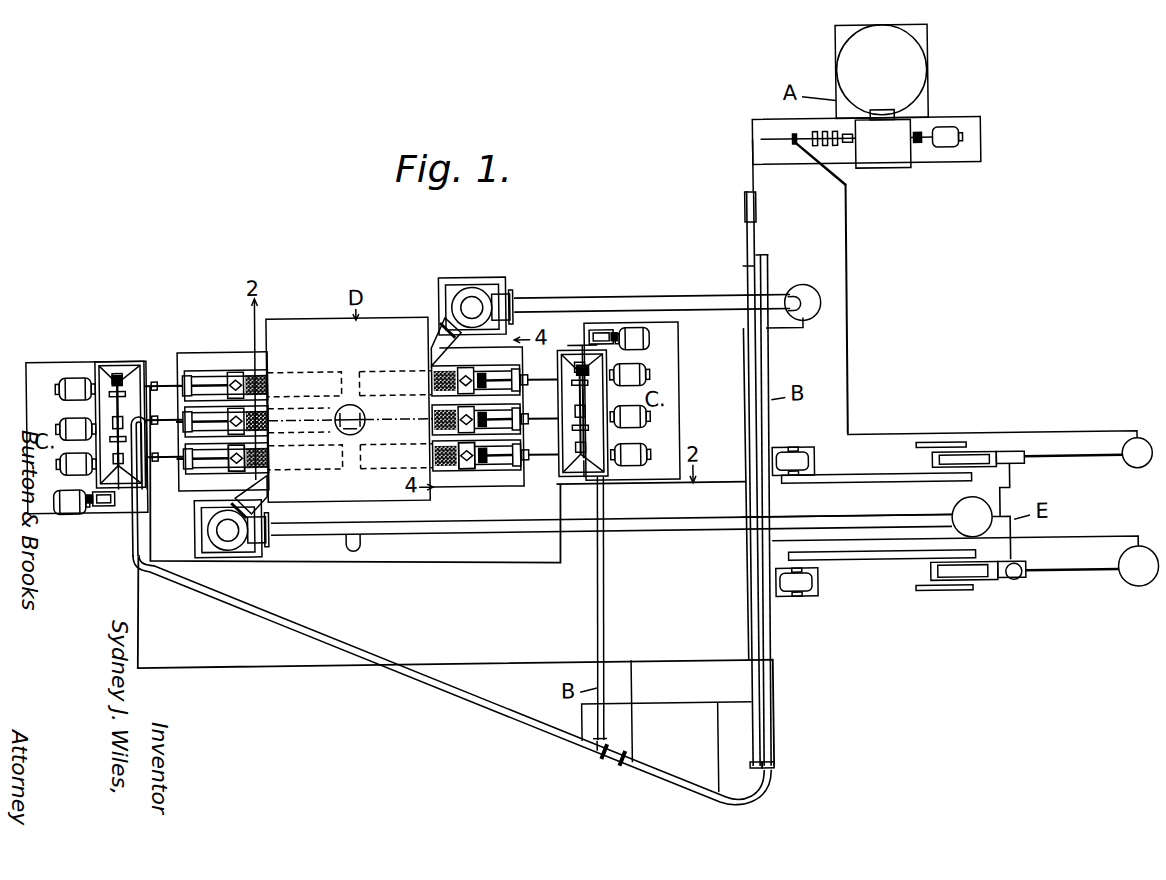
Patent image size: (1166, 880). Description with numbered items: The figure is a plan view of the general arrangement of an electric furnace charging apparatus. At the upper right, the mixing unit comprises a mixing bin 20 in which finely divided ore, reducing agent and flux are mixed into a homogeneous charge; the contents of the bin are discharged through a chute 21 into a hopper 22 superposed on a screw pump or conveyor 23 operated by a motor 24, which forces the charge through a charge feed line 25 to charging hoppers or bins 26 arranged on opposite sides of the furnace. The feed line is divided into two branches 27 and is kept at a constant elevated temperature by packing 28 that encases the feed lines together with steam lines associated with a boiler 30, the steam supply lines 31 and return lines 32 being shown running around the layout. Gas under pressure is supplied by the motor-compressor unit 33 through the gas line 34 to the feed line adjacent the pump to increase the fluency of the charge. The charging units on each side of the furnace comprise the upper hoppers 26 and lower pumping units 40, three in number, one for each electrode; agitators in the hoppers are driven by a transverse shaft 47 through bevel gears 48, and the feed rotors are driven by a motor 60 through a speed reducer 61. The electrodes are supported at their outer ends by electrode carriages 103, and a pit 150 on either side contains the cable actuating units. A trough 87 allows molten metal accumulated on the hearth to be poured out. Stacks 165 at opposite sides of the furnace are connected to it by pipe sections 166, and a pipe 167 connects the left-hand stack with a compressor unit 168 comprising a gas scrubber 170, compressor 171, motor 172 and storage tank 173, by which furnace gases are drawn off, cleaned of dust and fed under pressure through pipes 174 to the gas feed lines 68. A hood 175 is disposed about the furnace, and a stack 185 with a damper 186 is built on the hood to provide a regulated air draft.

The mixing bin 20 is at (914, 70).
The chute 21 is at (885, 118).
The hopper 22 is at (889, 150).
The screw pump or conveyor 23 is at (840, 146).
The motor 24 is at (945, 150).
The charge feed line 25 is at (758, 182).
The charging hoppers or bins 26 is at (120, 362).
The branches 27 is at (607, 747).
The packing 28 is at (336, 643).
The boiler 30 is at (807, 298).
The steam supply lines 31 is at (770, 349).
The return lines 32 is at (760, 335).
The motor-compressor unit 33 is at (933, 458).
The gas line 34 is at (905, 433).
The pumping units 40 is at (68, 410).
The transverse shaft 47 is at (121, 412).
The bevel gears 48 is at (124, 392).
The motor 60 is at (70, 513).
The speed reducer 61 is at (103, 506).
The gas feed lines 68 is at (452, 532).
The trough 87 is at (360, 545).
The electrode carriages 103 is at (470, 466).
The pit 150 is at (222, 352).
The stacks 165 is at (475, 298).
The pipe sections 166 is at (445, 340).
The pipe 167 is at (497, 532).
The compressor unit 168 is at (1016, 536).
The gas scrubber 170 is at (964, 506).
The compressor 171 is at (977, 572).
The motor 172 is at (817, 580).
The storage tank 173 is at (1118, 580).
The pipes 174 is at (1091, 543).
The hood 175 is at (348, 412).
The stack 185 is at (360, 412).
The damper 186 is at (358, 430).